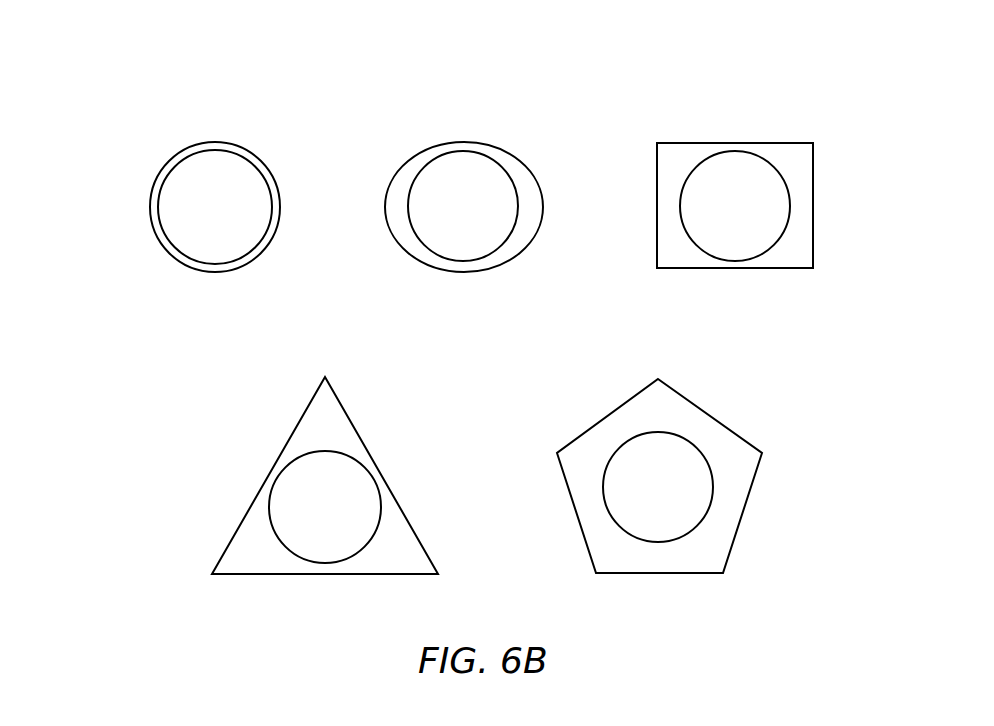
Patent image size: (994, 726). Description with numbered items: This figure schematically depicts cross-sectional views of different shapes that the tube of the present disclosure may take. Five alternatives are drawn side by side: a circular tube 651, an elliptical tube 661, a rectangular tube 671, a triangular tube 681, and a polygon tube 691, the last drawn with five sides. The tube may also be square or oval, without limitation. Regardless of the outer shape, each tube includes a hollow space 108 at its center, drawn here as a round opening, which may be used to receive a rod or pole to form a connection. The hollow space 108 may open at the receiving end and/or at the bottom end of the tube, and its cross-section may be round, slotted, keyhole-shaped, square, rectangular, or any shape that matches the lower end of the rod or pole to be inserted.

The hollow space 108 is at (262, 168).
The circular tube 651 is at (145, 135).
The elliptical tube 661 is at (438, 118).
The rectangular tube 671 is at (706, 107).
The triangular tube 681 is at (248, 410).
The polygon tube 691 is at (582, 388).